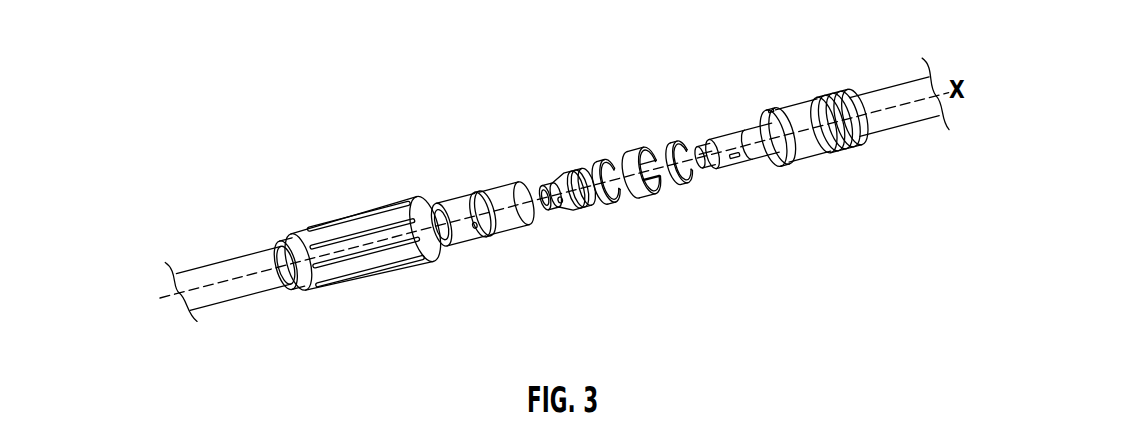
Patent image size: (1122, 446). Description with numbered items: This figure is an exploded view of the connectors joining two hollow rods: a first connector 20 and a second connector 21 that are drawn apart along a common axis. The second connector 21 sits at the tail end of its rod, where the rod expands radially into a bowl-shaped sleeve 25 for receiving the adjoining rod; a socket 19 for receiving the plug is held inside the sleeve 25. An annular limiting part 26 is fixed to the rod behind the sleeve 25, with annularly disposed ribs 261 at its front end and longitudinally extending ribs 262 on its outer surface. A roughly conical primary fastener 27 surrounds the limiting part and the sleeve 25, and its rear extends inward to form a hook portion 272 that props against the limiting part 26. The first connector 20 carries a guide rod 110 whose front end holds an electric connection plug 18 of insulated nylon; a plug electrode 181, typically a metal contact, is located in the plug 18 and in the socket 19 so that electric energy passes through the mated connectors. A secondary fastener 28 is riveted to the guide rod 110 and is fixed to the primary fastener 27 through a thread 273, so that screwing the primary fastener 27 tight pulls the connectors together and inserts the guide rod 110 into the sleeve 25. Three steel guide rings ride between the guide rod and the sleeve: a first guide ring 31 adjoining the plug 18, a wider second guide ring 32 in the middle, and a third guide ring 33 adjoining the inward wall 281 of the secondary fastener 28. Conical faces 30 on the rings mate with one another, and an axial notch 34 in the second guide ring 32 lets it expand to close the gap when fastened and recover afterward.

The first connector 20 is at (823, 186).
The second connector 21 is at (440, 288).
The plug 18 is at (716, 172).
The plug electrode 181 is at (559, 191).
The guide rod 110 is at (751, 128).
The secondary fastener 28 is at (807, 104).
The wall 281 is at (769, 114).
The thread 273 is at (851, 157).
The socket 19 is at (588, 212).
The conical face 30 is at (628, 167).
The first guide ring 31 is at (621, 195).
The second guide ring 32 is at (652, 200).
The third guide ring 33 is at (685, 187).
The notch 34 is at (673, 150).
The sleeve 25 is at (516, 231).
The limiting part 26 is at (461, 247).
The ribs 261 is at (483, 190).
The ribs 262 is at (457, 193).
The primary fastener 27 is at (361, 285).
The hook portion 272 is at (293, 301).